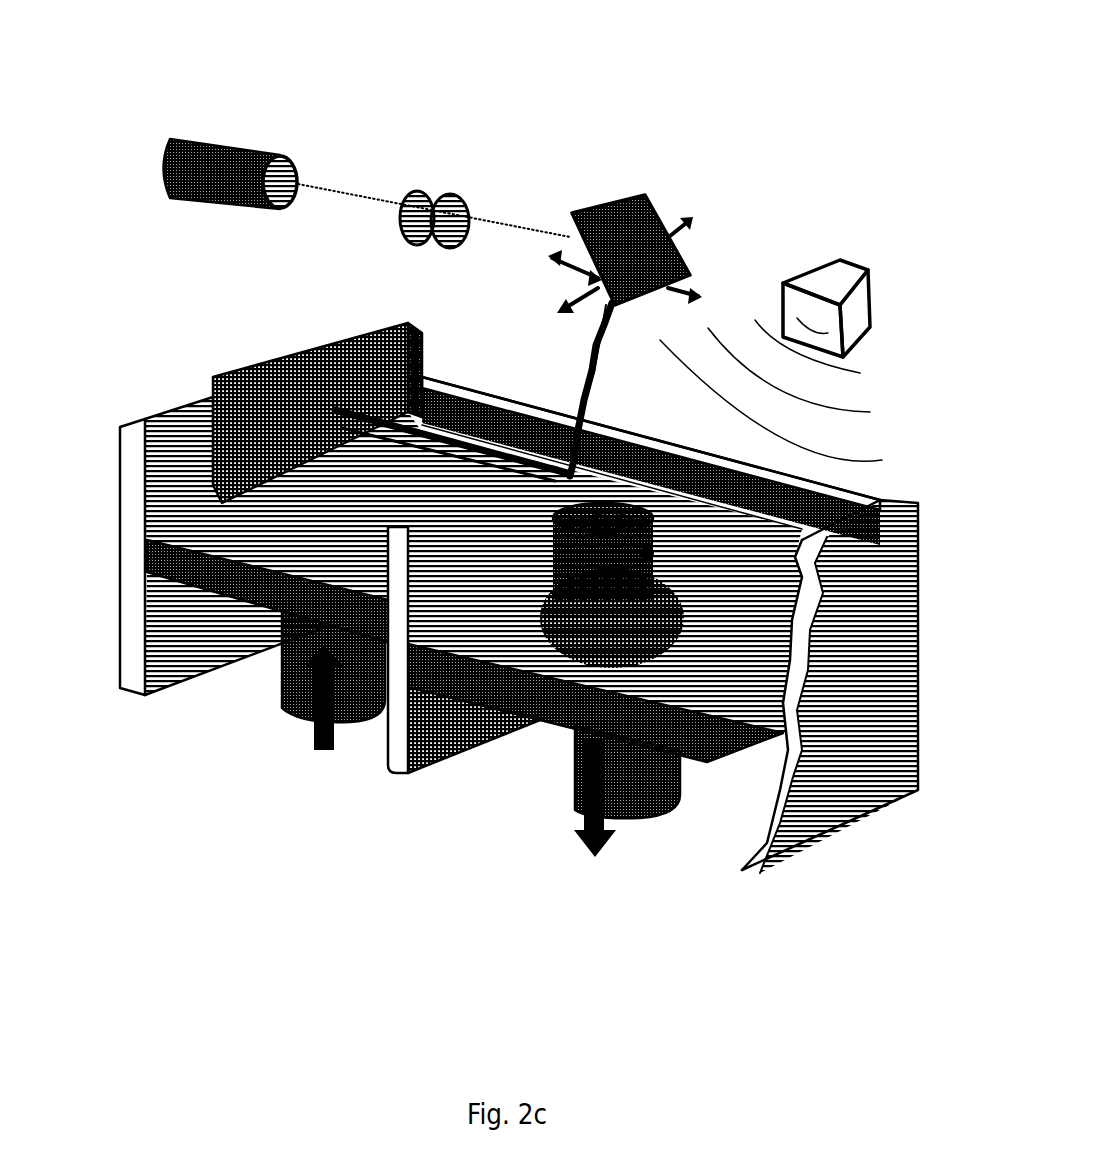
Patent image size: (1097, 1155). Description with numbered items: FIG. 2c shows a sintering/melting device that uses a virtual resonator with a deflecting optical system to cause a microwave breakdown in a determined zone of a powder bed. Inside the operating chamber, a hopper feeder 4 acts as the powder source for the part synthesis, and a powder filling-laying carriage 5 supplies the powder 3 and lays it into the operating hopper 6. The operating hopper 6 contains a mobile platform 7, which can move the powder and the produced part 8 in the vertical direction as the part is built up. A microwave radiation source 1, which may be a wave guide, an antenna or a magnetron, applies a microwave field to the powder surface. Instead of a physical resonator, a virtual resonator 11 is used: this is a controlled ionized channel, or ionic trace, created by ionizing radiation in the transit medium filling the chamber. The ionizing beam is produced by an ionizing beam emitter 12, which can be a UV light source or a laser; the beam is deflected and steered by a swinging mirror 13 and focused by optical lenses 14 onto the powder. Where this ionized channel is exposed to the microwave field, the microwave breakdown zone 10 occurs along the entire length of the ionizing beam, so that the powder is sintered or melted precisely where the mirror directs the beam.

The microwave radiation source 1 is at (790, 298).
The powder 3 is at (514, 681).
The hopper feeder 4 is at (262, 665).
The powder filling-laying carriage 5 is at (251, 369).
The operating hopper 6 is at (466, 719).
The mobile platform 7 is at (635, 842).
The produced part 8 is at (682, 383).
The microwave breakdown zone 10 is at (531, 378).
The virtual resonator 11 is at (577, 385).
The ionizing beam emitter 12 is at (248, 106).
The swinging mirror 13 is at (635, 187).
The optical lenses 14 is at (465, 149).